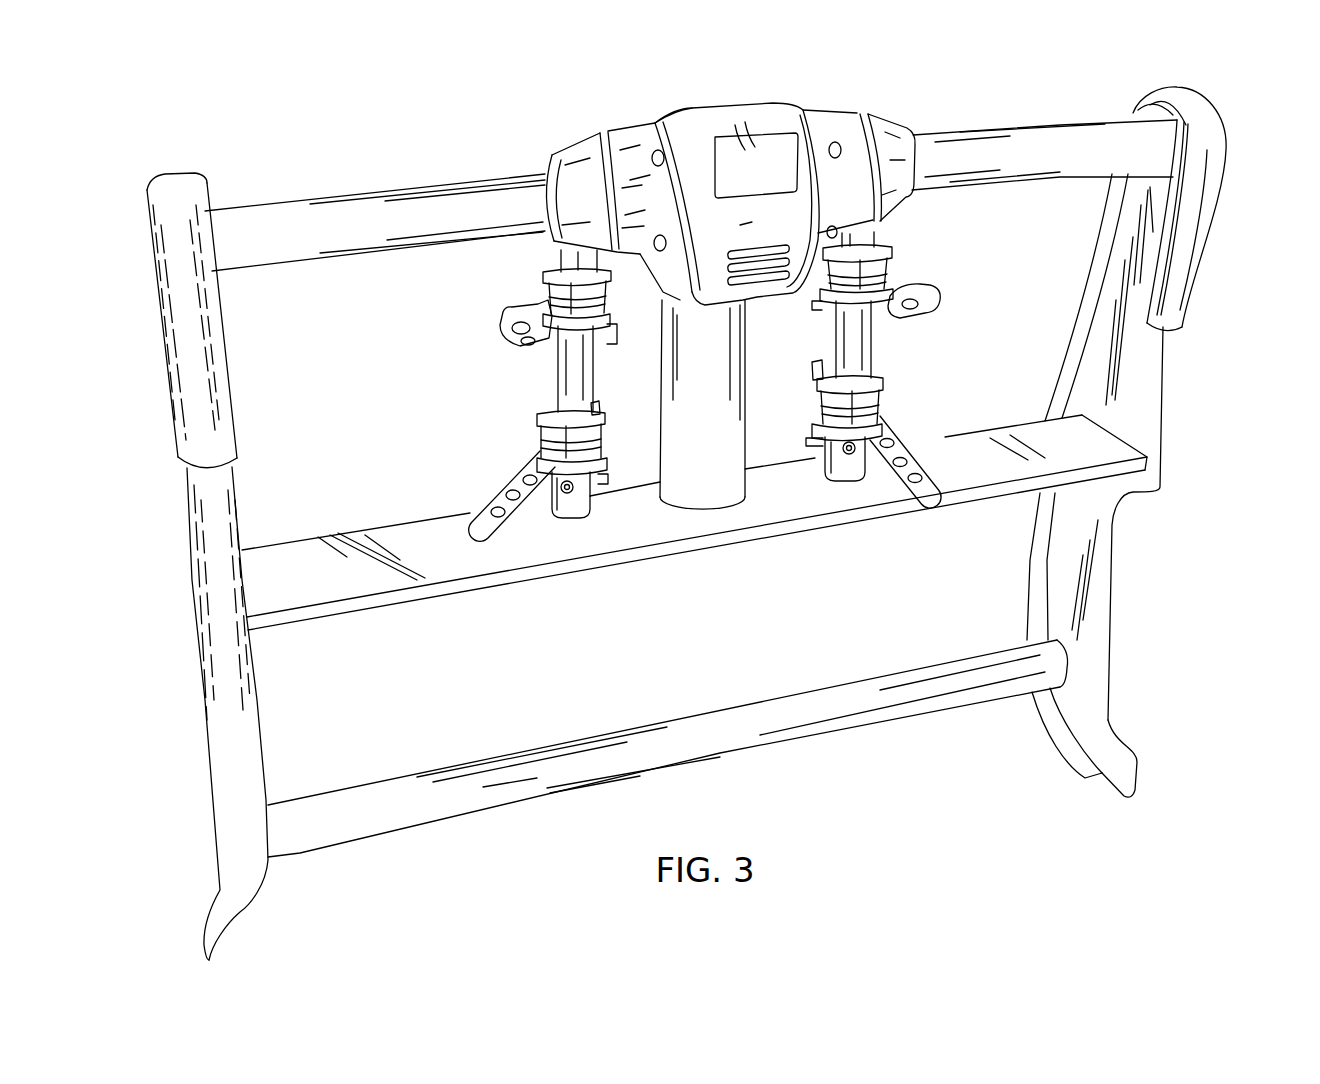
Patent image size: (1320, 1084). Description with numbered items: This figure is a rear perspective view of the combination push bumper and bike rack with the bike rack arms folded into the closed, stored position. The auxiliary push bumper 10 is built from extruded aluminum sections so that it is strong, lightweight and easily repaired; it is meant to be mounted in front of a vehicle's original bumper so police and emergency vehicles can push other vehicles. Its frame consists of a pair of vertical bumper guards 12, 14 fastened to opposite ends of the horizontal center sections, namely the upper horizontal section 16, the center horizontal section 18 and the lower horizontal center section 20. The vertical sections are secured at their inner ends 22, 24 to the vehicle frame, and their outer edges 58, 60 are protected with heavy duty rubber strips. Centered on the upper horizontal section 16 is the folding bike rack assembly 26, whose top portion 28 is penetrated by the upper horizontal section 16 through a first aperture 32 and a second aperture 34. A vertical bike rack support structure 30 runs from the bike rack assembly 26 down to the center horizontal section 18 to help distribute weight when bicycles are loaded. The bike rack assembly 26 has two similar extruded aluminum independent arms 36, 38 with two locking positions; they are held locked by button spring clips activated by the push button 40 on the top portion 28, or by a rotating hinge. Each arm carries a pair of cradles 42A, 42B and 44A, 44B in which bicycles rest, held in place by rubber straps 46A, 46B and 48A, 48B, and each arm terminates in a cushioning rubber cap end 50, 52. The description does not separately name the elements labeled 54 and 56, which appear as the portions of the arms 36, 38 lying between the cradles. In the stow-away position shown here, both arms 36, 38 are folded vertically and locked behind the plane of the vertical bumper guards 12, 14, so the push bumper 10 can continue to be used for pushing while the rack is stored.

The auxiliary push bumper 10 is at (1237, 97).
The vertical bumper guard 12 is at (1168, 370).
The vertical bumper guard 14 is at (190, 545).
The upper horizontal section 16 is at (1030, 130).
The center horizontal section 18 is at (1014, 428).
The horizontal center section 20 is at (912, 662).
The inner end 22 is at (1105, 640).
The inner end 24 is at (255, 718).
The folding bike rack assembly 26 is at (618, 112).
The top portion 28 is at (740, 196).
The vertical bike rack support structure 30 is at (668, 440).
The first aperture 32 is at (905, 130).
The left housing section 34 is at (545, 160).
The arm 36 is at (891, 384).
The arm 38 is at (523, 410).
The push button 40 is at (738, 103).
The cradle 42A is at (883, 270).
The cradle 42B is at (882, 412).
The cradle 44A is at (551, 302).
The cradle 44B is at (541, 447).
The rubber strap 46A is at (935, 300).
The rubber strap 46B is at (922, 497).
The rubber strap 48A is at (500, 325).
The rubber strap 48B is at (485, 552).
The cap end 50 is at (846, 510).
The cap end 52 is at (572, 520).
The right shaft 54 is at (845, 342).
The left shaft 56 is at (580, 375).
The outer edge 58 is at (1185, 253).
The outer edge 60 is at (182, 345).